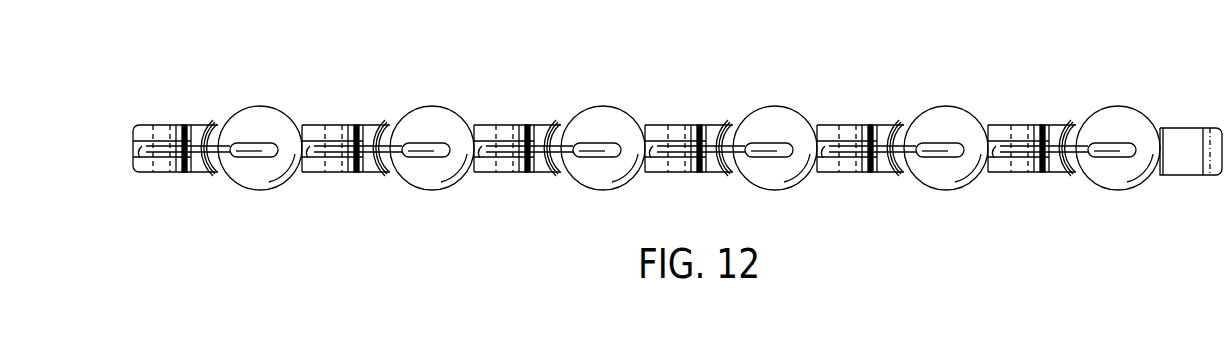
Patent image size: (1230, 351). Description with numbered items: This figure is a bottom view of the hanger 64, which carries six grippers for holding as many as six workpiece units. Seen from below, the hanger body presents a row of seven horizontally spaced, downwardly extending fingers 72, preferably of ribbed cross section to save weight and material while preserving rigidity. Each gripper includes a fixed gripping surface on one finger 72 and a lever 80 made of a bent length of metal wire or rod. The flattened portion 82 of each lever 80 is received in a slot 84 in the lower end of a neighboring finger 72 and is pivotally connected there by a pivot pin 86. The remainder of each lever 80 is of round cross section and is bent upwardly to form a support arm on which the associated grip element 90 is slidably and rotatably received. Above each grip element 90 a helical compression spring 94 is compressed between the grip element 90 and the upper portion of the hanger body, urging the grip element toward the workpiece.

The hanger 64 is at (557, 69).
The fingers 72 is at (182, 170).
The lever 80 is at (253, 144).
The flattened portion 82 is at (184, 126).
The slot 84 is at (138, 151).
The pivot pin 86 is at (150, 130).
The grip element 90 is at (778, 125).
The helical compression spring 94 is at (210, 128).